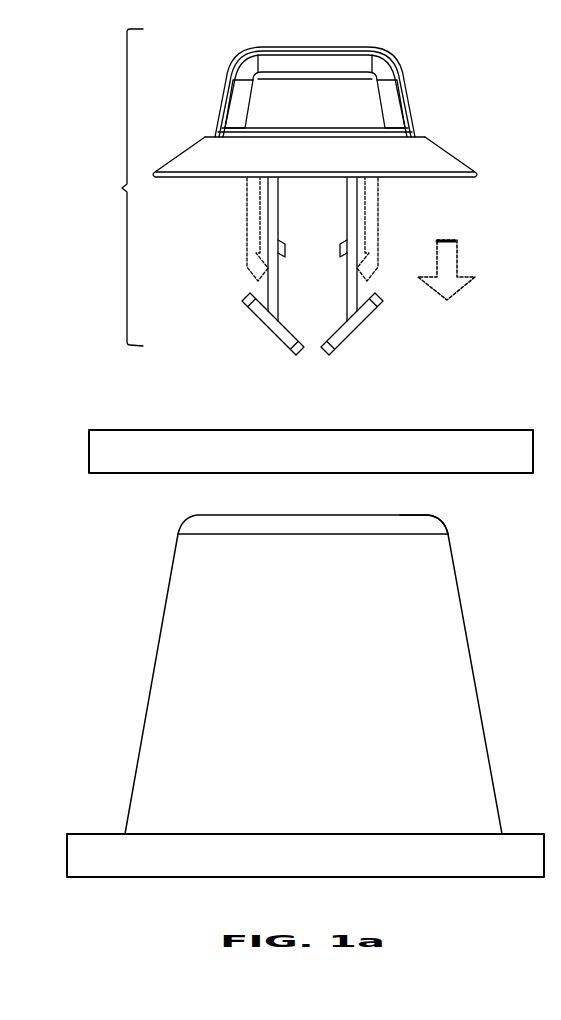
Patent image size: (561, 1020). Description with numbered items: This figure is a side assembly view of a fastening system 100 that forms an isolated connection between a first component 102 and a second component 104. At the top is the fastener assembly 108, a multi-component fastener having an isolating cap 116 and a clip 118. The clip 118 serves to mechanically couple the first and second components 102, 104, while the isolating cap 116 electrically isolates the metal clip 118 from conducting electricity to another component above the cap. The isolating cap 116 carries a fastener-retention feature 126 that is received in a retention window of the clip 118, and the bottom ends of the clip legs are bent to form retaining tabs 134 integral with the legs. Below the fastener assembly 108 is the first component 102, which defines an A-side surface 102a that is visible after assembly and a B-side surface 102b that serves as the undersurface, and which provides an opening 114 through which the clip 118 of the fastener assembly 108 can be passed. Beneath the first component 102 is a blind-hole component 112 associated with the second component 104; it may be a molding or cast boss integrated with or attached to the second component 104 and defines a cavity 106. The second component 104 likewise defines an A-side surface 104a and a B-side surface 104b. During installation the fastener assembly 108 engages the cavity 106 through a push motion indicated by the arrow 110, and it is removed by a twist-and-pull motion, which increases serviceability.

The fastening system 100 is at (545, 88).
The fastener assembly 108 is at (122, 188).
The isolating cap 116 is at (423, 105).
The clip 118 is at (220, 247).
The fastener-retention feature 126 is at (347, 250).
The retaining tab 134 is at (347, 327).
The arrow 110 is at (462, 262).
The first component 102 is at (493, 428).
The A-side surface 102a is at (113, 428).
The B-side surface 102b is at (113, 475).
The opening 114 is at (349, 430).
The cavity 106 is at (338, 516).
The blind-hole component 112 is at (429, 514).
The second component 104 is at (522, 832).
The A-side surface 104a is at (93, 832).
The B-side surface 104b is at (93, 878).